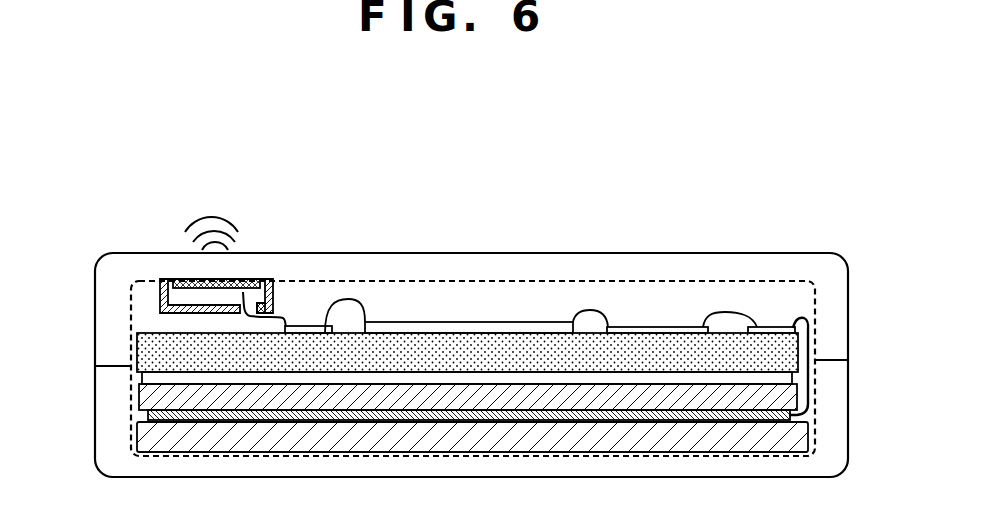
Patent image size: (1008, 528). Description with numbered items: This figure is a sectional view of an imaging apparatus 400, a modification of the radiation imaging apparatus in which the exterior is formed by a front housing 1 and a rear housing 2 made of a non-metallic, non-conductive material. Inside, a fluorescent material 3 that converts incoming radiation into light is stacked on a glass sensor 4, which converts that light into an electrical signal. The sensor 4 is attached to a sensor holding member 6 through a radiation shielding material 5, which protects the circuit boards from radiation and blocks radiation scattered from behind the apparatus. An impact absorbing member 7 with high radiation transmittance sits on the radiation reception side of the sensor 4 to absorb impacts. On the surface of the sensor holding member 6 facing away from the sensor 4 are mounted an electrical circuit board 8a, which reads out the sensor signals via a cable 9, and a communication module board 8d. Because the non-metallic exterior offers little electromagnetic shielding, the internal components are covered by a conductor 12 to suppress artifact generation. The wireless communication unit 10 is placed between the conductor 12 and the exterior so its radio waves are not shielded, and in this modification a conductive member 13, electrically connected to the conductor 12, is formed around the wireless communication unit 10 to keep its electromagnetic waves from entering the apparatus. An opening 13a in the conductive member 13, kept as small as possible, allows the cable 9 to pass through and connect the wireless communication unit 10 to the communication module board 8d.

The imaging apparatus 400 is at (540, 128).
The front housing 1 is at (95, 455).
The rear housing 2 is at (800, 253).
The fluorescent material 3 is at (790, 415).
The sensor 4 is at (140, 400).
The radiation shielding material 5 is at (142, 378).
The sensor holding member 6 is at (140, 346).
The impact absorbing member 7 is at (800, 440).
The electrical circuit board 8a is at (772, 327).
The communication module board 8d is at (312, 326).
The cable 9 is at (289, 327).
The wireless communication unit 10 is at (185, 279).
The conductor 12 is at (457, 280).
The conductive member 13 is at (160, 297).
The opening 13a is at (258, 305).